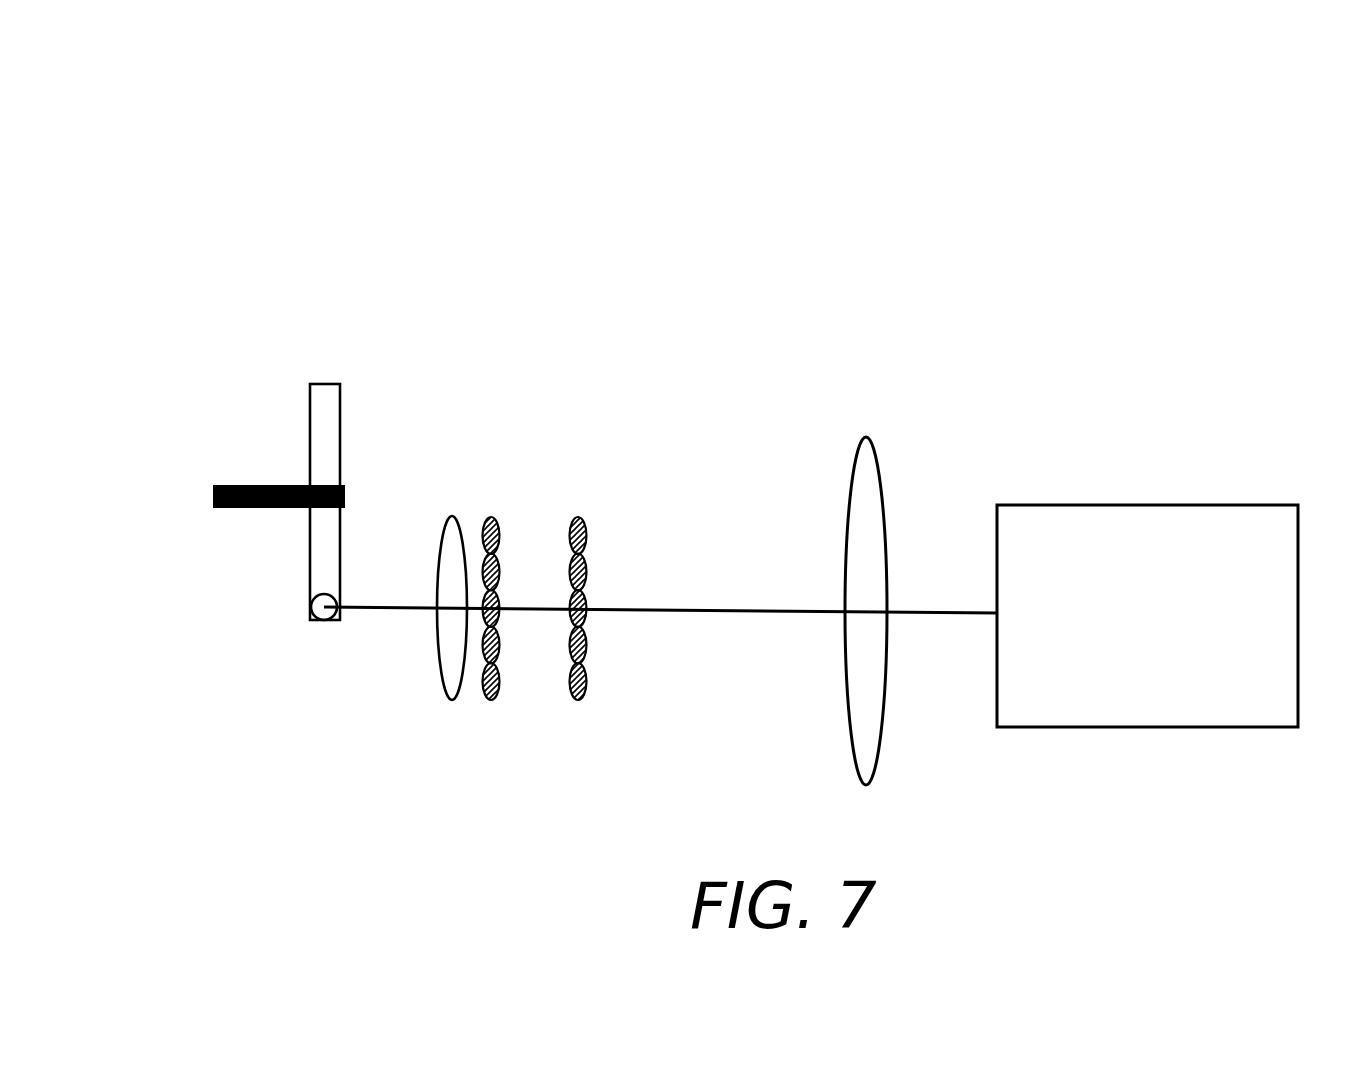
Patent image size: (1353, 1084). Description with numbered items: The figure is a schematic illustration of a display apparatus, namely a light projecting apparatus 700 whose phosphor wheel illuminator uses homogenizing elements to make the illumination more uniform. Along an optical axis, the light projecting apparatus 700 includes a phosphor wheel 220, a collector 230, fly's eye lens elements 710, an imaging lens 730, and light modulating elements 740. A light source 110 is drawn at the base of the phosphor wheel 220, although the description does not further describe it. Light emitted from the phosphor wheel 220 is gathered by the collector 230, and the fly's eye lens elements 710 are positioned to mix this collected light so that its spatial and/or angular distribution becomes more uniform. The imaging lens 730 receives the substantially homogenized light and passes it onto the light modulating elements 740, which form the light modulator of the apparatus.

The light projecting apparatus 700 is at (194, 218).
The light source 110 is at (303, 655).
The phosphor wheel 220 is at (288, 433).
The collector 230 is at (455, 522).
The fly's eye lens elements 710 is at (497, 488).
The imaging lens 730 is at (898, 792).
The light modulating elements 740 is at (1230, 504).